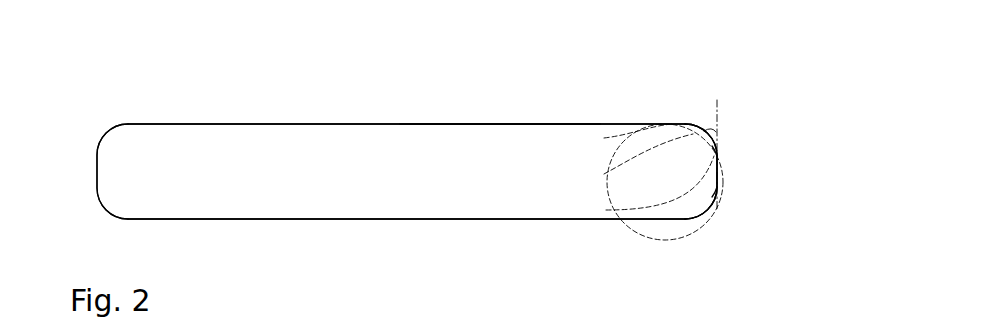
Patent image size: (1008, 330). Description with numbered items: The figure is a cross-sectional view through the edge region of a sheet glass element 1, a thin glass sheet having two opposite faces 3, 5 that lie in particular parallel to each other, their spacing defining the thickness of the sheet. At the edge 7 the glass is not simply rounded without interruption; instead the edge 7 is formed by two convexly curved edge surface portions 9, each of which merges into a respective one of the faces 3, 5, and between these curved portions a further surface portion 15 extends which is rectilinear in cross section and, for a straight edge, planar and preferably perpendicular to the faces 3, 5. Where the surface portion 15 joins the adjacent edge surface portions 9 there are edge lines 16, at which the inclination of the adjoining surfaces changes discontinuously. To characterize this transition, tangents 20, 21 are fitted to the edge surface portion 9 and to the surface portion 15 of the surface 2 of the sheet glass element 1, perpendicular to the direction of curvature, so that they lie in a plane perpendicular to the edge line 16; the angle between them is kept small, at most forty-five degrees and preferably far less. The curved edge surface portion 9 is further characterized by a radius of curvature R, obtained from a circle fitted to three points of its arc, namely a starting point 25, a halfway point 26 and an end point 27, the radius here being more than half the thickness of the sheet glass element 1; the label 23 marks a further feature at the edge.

The sheet glass element 1 is at (608, 262).
The surface 2 is at (517, 124).
The face 3 is at (335, 124).
The face 5 is at (432, 219).
The edge 7 is at (78, 152).
The convexly curved edge surface portion 9 is at (704, 139).
The surface portion 15 is at (720, 172).
The edge line 16 is at (719, 157).
The tangent 20 is at (700, 128).
The tangent 21 is at (705, 128).
The contact point / chamfer 23 is at (704, 131).
The starting point 25 is at (644, 188).
The halfway point 26 is at (634, 161).
The end point 27 is at (623, 140).
The radius of rounding R is at (699, 138).